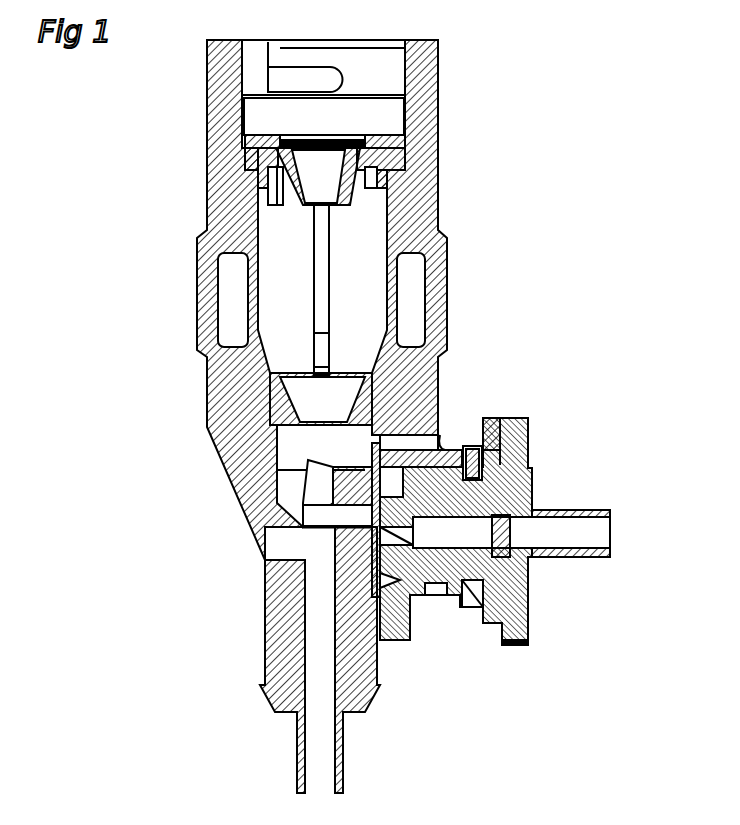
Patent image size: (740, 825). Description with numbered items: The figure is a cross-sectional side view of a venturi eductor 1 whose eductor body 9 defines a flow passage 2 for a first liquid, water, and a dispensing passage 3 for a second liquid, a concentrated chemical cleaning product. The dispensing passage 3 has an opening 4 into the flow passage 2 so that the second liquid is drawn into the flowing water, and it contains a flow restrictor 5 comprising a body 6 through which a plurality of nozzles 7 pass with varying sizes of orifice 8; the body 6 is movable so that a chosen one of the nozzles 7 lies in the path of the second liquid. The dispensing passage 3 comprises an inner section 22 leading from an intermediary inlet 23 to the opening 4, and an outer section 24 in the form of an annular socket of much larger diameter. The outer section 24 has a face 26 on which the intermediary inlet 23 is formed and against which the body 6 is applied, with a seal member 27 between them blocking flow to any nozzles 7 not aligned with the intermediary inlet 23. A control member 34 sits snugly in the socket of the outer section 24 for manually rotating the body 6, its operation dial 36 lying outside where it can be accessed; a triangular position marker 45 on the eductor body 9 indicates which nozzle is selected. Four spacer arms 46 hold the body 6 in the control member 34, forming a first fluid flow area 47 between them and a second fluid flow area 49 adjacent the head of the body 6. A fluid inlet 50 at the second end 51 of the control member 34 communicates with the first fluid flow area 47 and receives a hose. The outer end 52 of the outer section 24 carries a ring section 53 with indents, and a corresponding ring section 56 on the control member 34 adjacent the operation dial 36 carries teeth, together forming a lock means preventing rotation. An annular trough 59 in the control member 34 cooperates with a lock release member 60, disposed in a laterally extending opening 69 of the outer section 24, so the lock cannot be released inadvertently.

The venturi eductor 1 is at (120, 113).
The eductor body 9 is at (197, 292).
The outer section 24 is at (355, 442).
The intermediary inlet 23 is at (330, 470).
The inner section 22 is at (330, 480).
The flow passage 2 is at (300, 499).
The opening 4 is at (320, 523).
The dispensing passage 3 is at (333, 548).
The seal member 27 is at (300, 606).
The control member 34 is at (530, 434).
The operation dial 36 is at (508, 418).
The outer end 52 is at (530, 418).
The position marker 45 is at (497, 418).
The annular trough 59 is at (473, 446).
The fluid inlet 50 is at (612, 512).
The second end 51 is at (534, 496).
The spacer arms 46 is at (510, 535).
The first fluid flow area 47 is at (530, 592).
The ring section 56 is at (528, 622).
The ring section 53 is at (522, 644).
The face 26 is at (468, 612).
The second fluid flow area 49 is at (438, 608).
The lock release member 60 is at (470, 617).
The laterally extending opening 69 is at (490, 620).
The orifice 8 is at (398, 610).
The nozzles 7 is at (445, 455).
The flow restrictor 5 is at (392, 452).
The body 6 is at (400, 445).